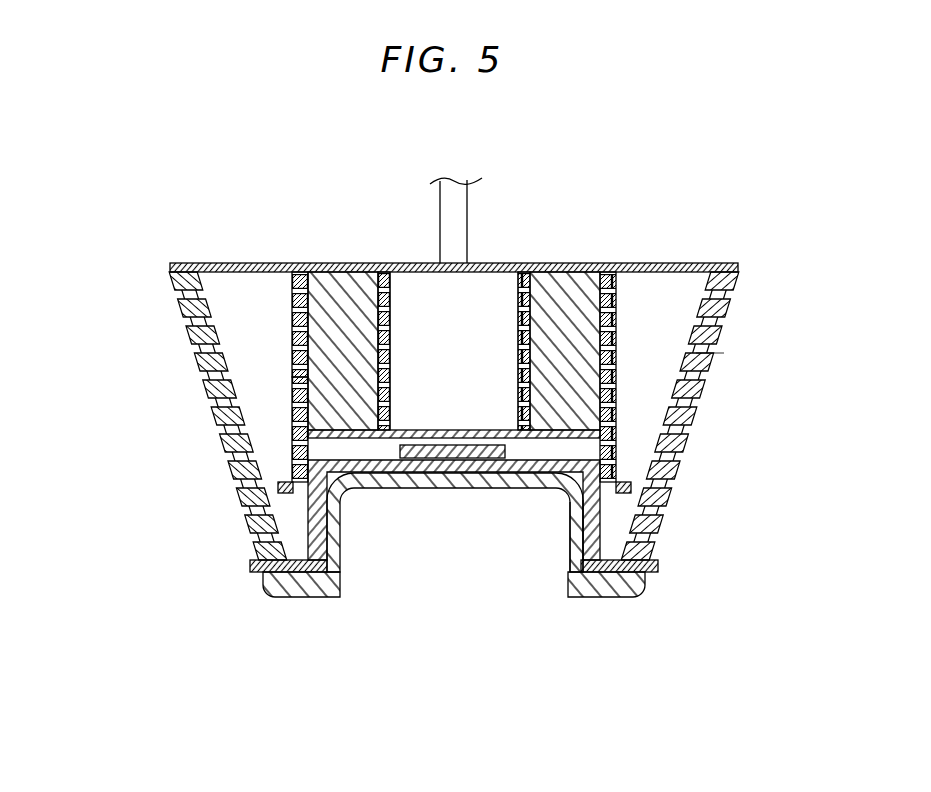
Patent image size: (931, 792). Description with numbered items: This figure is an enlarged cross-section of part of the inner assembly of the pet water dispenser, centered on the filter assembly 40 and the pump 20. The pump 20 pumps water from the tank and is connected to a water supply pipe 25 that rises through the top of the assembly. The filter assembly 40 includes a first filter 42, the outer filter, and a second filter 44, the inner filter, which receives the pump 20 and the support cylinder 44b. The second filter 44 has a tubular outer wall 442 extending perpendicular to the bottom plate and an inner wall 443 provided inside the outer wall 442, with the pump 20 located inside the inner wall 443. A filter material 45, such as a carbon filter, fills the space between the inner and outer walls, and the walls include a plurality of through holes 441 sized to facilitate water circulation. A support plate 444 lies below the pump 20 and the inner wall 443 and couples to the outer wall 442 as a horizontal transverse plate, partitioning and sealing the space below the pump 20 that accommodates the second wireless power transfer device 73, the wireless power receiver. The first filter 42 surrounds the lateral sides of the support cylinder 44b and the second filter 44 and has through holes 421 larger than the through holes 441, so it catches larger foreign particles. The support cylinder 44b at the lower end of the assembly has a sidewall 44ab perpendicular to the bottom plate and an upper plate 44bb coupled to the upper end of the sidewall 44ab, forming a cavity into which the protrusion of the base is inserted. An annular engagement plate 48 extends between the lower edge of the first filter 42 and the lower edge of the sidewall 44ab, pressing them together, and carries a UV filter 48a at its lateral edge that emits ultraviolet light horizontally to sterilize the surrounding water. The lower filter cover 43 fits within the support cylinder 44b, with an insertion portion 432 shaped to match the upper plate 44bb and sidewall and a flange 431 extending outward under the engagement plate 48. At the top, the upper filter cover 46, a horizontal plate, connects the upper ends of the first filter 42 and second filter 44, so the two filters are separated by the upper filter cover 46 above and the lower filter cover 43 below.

The pump 20 is at (422, 308).
The water supply pipe 25 is at (466, 212).
The filter assembly 40 is at (789, 418).
The first filter 42 is at (704, 378).
The through holes 421 is at (705, 352).
The lower filter cover 43 is at (625, 675).
The flange 431 is at (613, 584).
The insertion portion 432 is at (556, 492).
The second filter 44 is at (617, 399).
The through holes 441 is at (300, 376).
The outer wall 442 is at (293, 300).
The inner wall 443 is at (376, 333).
The support plate 444 is at (396, 440).
The support cylinder 44b is at (99, 437).
The upper plate 44bb is at (362, 456).
The sidewall 44ab is at (308, 536).
The filter material 45 is at (580, 287).
The upper filter cover 46 is at (270, 266).
The engagement plate 48 is at (263, 577).
The UV filter 48a is at (250, 566).
The second wireless power transfer device 73 is at (477, 460).